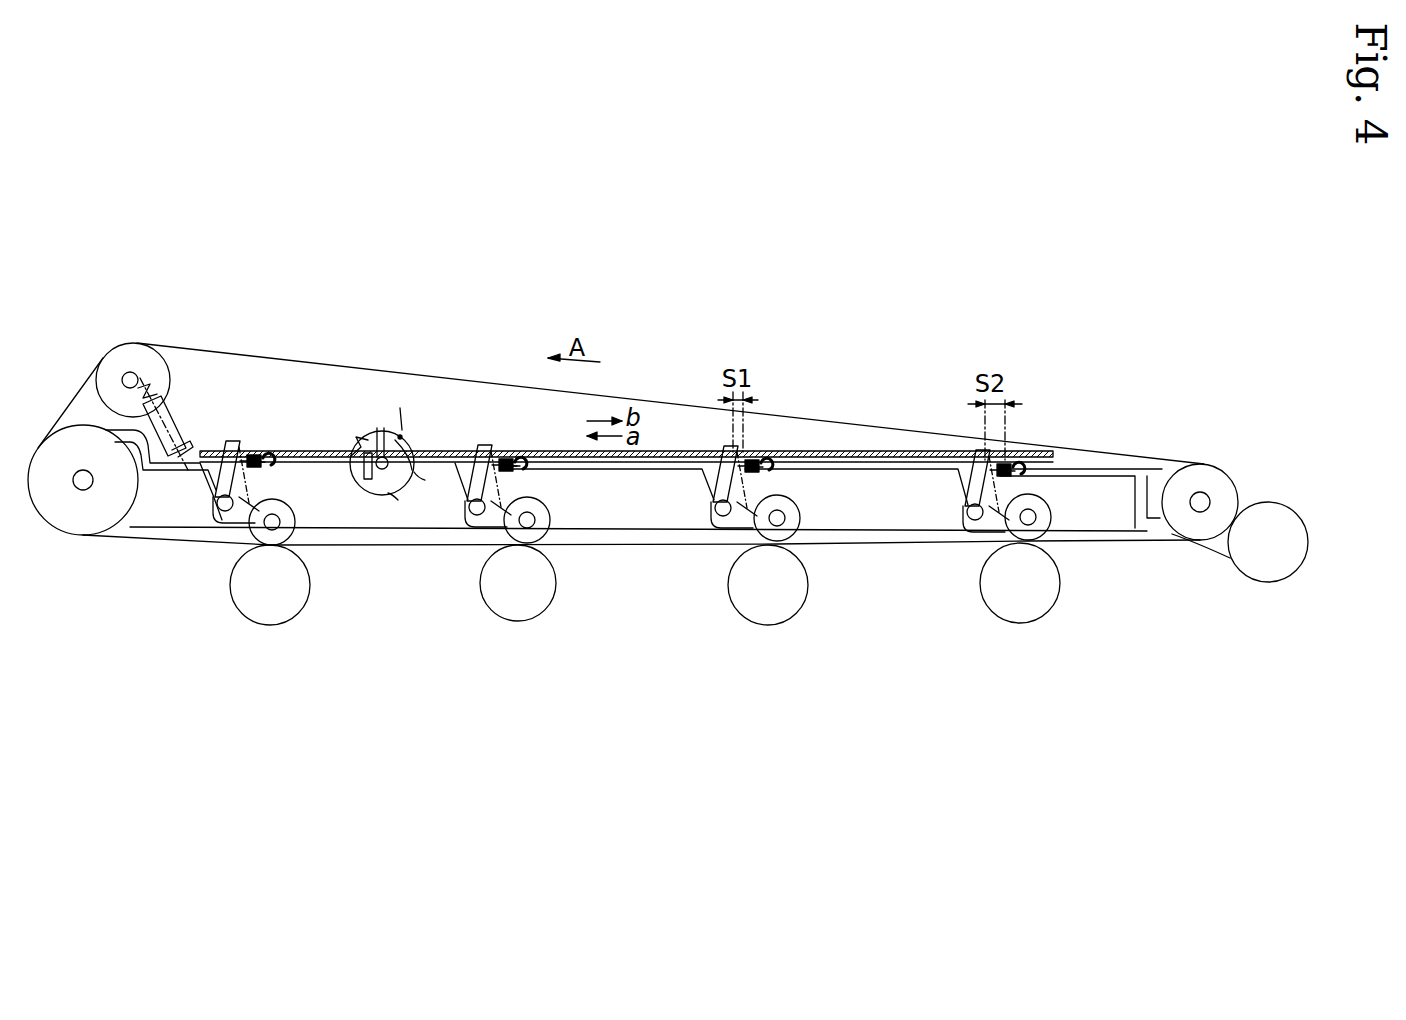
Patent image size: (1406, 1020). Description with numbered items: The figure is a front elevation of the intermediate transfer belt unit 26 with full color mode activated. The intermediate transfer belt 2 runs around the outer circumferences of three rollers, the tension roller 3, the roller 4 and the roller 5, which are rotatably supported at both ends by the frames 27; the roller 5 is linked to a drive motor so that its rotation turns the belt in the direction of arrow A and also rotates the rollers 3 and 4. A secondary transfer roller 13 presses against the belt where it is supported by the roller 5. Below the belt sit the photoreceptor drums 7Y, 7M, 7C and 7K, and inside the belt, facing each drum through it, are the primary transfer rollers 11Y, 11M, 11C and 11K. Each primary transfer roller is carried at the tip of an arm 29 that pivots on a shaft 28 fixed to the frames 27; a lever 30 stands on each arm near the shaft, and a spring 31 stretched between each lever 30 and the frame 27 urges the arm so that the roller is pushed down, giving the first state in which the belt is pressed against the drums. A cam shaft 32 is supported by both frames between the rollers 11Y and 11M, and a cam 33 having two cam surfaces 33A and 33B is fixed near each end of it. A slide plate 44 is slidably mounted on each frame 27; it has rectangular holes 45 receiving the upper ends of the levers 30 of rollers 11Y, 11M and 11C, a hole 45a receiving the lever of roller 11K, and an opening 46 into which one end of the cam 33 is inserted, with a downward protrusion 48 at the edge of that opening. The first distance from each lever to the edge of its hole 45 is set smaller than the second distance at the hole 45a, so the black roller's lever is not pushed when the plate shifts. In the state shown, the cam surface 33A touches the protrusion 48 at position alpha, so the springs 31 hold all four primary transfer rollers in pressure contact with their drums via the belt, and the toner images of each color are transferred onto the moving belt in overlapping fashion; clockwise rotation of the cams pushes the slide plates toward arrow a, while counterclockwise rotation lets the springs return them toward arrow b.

The intermediate transfer belt 2 is at (228, 352).
The tension roller 3 is at (136, 350).
The roller 4 is at (70, 520).
The roller 5 is at (1212, 478).
The secondary transfer roller 13 is at (1262, 583).
The intermediate transfer belt unit 26 is at (670, 383).
The frame 27 is at (655, 510).
The shaft 28 is at (460, 512).
The arm 29 is at (490, 522).
The lever 30 is at (483, 443).
The spring 31 is at (525, 467).
The cam shaft 32 is at (375, 440).
The cam 33 is at (405, 391).
The cam surface 33A is at (405, 438).
The cam surface 33B is at (385, 435).
The slide plate 44 is at (656, 449).
The rectangular hole 45 is at (507, 452).
The hole 45a is at (997, 470).
The opening 46 is at (430, 440).
The protrusion 48 is at (342, 447).
The photoreceptor drum 7Y is at (268, 625).
The photoreceptor drum 7M is at (512, 621).
The photoreceptor drum 7C is at (768, 625).
The photoreceptor drum 7K is at (1010, 623).
The primary transfer roller 11Y is at (292, 538).
The primary transfer roller 11M is at (542, 535).
The primary transfer roller 11C is at (790, 536).
The primary transfer roller 11K is at (1042, 534).